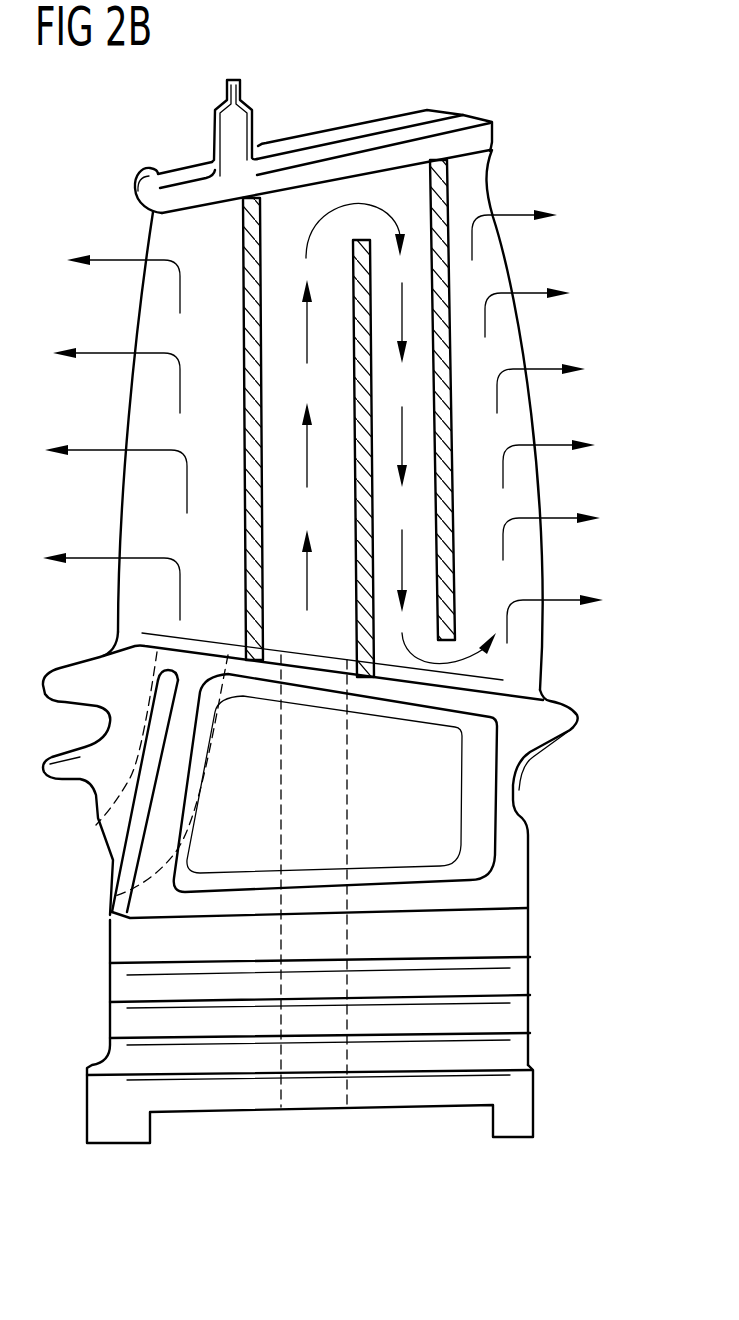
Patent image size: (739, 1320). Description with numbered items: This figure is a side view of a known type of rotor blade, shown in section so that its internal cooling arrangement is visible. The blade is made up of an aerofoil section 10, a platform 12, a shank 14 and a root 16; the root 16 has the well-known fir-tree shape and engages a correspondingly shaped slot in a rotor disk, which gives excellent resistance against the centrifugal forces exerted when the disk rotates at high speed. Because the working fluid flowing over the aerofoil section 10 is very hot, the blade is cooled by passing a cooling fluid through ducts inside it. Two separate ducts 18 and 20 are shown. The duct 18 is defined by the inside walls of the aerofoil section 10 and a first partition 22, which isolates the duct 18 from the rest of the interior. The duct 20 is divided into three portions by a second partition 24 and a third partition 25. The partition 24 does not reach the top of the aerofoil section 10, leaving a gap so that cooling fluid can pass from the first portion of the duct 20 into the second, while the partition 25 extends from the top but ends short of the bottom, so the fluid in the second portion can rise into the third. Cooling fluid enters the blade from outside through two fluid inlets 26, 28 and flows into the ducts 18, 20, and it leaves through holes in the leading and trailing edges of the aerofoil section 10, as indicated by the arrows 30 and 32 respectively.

The aerofoil section 10 is at (507, 266).
The platform 12 is at (72, 657).
The shank 14 is at (538, 762).
The root 16 is at (123, 986).
The duct 18 is at (165, 236).
The duct 20 is at (399, 183).
The first partition 22 is at (243, 322).
The second partition 24 is at (362, 254).
The third partition 25 is at (437, 200).
The fluid inlet 26 is at (108, 840).
The fluid inlet 28 is at (316, 1098).
The arrows (leading edge outflow) 30 is at (97, 356).
The arrows (trailing edge outflow) 32 is at (547, 366).